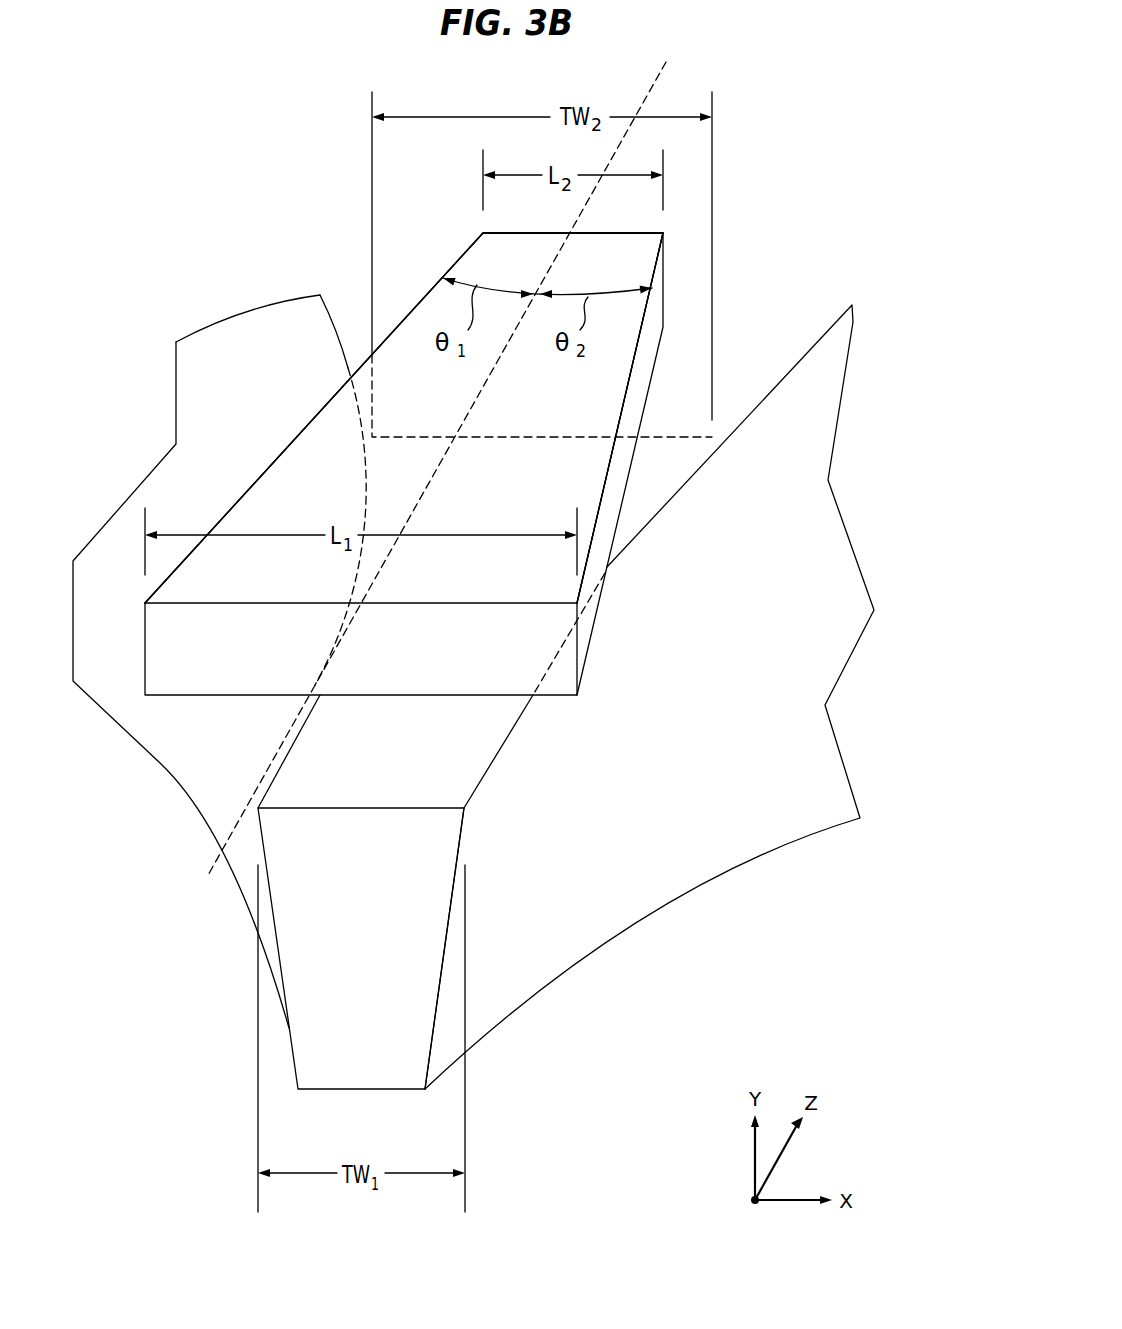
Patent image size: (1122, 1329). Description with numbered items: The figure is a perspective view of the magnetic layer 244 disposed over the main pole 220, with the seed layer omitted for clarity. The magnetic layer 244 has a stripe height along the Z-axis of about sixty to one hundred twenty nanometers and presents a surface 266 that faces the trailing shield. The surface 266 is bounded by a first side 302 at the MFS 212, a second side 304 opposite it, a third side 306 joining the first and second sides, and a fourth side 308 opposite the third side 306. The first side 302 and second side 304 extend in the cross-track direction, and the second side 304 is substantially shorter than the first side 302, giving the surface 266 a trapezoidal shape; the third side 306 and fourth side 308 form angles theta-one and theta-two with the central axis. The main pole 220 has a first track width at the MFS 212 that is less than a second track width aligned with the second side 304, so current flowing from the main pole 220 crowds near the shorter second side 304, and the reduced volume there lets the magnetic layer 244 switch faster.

The MFS 212 is at (428, 841).
The main pole 220 is at (435, 920).
The magnetic layer 244 is at (600, 395).
The surface 266 is at (529, 423).
The first side 302 is at (477, 605).
The second side 304 is at (513, 233).
The third side 306 is at (325, 408).
The fourth side 308 is at (637, 353).